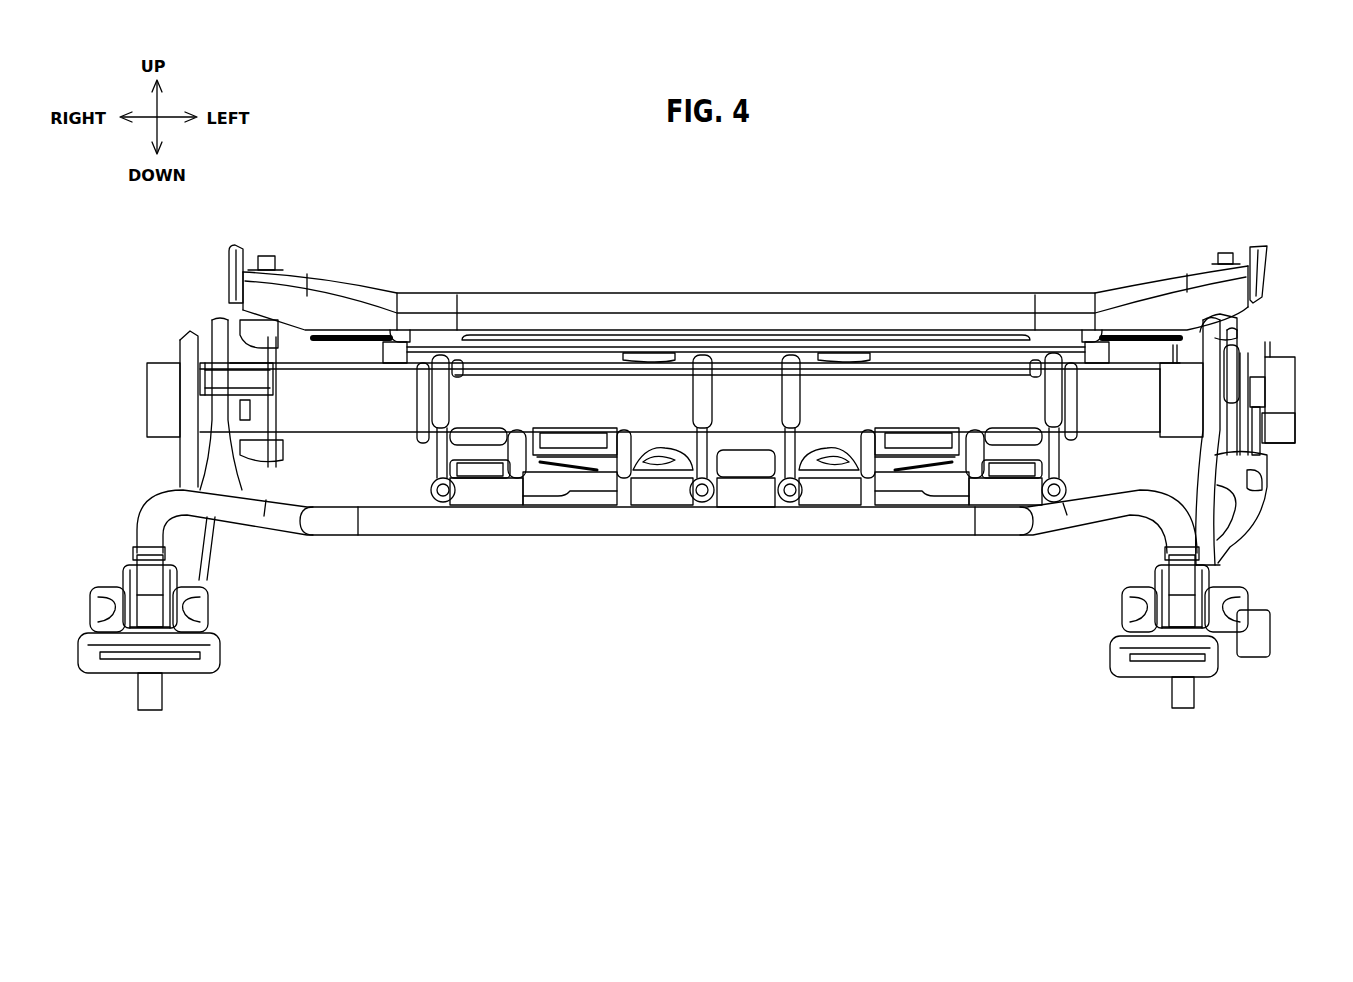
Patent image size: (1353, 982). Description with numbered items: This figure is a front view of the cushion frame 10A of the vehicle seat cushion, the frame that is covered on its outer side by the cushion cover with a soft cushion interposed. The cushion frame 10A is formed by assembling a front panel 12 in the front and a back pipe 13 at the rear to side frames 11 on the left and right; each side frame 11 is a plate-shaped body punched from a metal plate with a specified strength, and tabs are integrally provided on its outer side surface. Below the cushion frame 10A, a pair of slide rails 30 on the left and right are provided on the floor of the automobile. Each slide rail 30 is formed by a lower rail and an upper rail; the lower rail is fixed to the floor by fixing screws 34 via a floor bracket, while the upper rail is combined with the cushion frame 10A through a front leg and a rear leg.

The cushion frame 10A is at (872, 272).
The side frame 11 is at (243, 274).
The front panel 12 is at (666, 309).
The back pipe 13 is at (568, 406).
The slide rail 30 is at (94, 576).
The fixing screw 34 is at (163, 690).